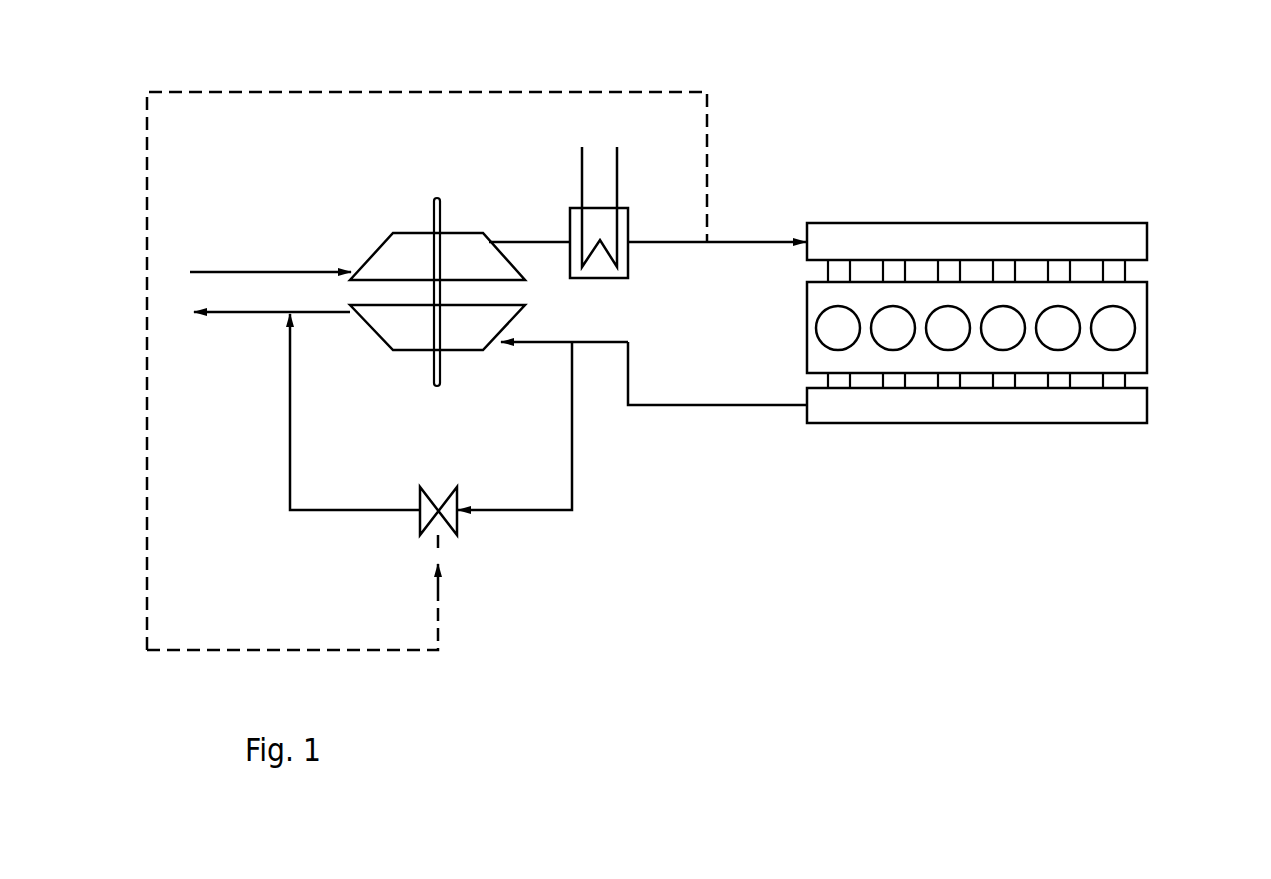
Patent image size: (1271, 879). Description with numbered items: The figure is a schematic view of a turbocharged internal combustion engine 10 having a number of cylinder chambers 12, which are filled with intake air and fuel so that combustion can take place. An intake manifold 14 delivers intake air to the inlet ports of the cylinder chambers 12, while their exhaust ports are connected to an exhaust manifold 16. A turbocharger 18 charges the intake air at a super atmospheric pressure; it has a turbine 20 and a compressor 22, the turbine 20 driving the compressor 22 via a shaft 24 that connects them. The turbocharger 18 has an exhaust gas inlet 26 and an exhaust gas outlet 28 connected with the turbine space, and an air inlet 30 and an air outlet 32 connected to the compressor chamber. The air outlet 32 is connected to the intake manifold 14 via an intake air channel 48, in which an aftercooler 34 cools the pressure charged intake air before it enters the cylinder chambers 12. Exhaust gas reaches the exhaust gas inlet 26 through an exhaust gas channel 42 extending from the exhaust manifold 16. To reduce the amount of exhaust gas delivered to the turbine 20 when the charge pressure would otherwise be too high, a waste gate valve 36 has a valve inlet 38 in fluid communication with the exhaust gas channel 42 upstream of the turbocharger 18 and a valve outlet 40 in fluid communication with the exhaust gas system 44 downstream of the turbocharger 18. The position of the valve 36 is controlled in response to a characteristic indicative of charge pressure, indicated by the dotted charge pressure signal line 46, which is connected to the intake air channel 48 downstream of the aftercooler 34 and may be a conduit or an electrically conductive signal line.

The internal combustion engine 10 is at (1027, 323).
The cylinder chambers 12 is at (1123, 328).
The intake manifold 14 is at (1123, 242).
The exhaust manifold 16 is at (1123, 405).
The turbocharger 18 is at (437, 277).
The turbine 20 is at (402, 330).
The compressor 22 is at (402, 255).
The shaft 24 is at (441, 204).
The exhaust gas inlet 26 is at (499, 349).
The exhaust gas outlet 28 is at (346, 314).
The air inlet 30 is at (345, 266).
The air outlet 32 is at (510, 240).
The aftercooler 34 is at (637, 206).
The valve 36 is at (440, 473).
The valve inlet 38 is at (497, 520).
The valve outlet 40 is at (380, 520).
The exhaust gas channel 42 is at (742, 406).
The exhaust gas system 44 is at (252, 315).
The charge pressure signal line 46 is at (425, 92).
The intake air channel 48 is at (740, 242).